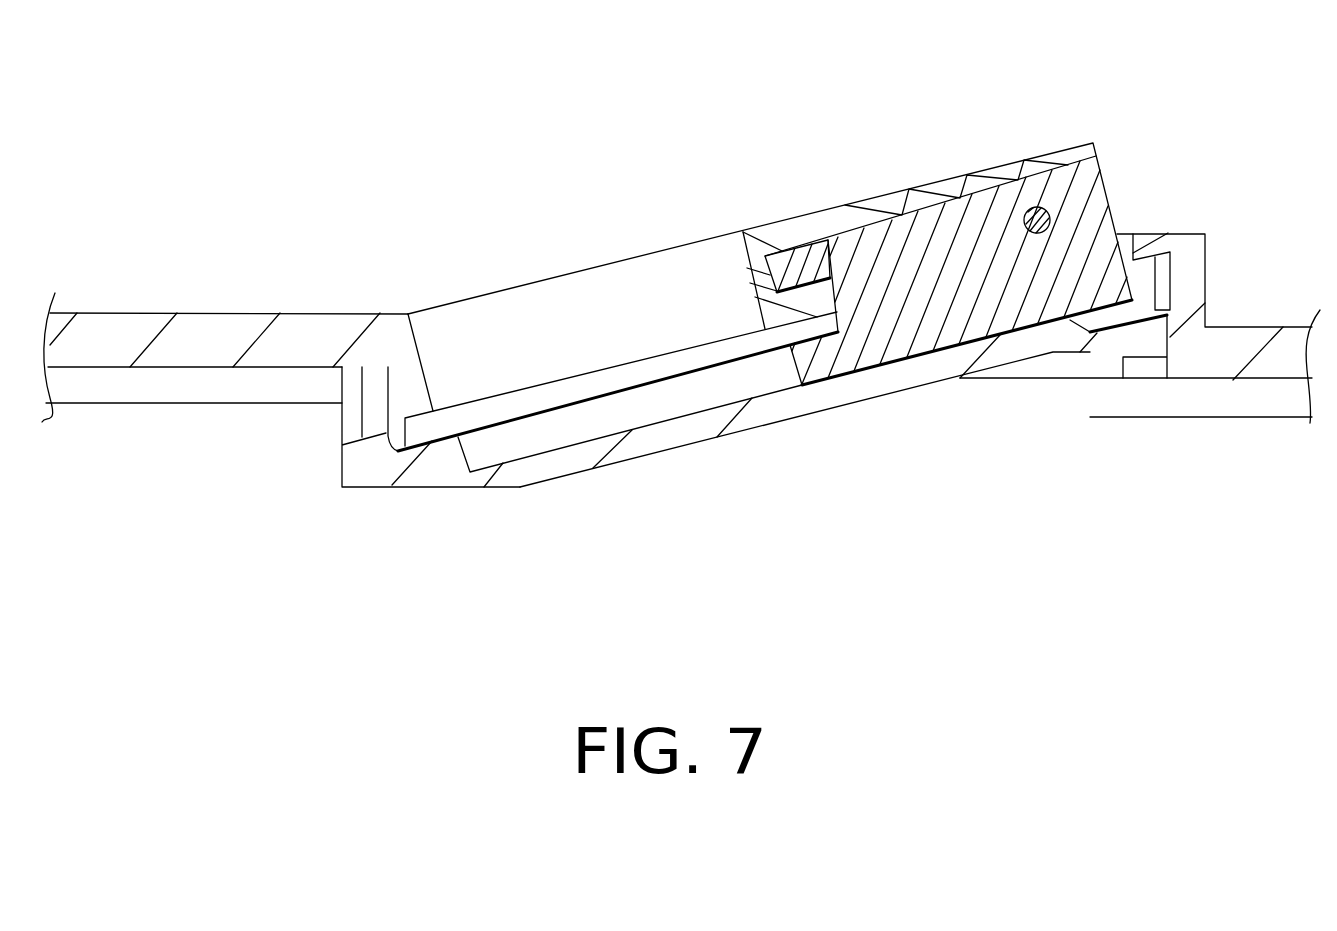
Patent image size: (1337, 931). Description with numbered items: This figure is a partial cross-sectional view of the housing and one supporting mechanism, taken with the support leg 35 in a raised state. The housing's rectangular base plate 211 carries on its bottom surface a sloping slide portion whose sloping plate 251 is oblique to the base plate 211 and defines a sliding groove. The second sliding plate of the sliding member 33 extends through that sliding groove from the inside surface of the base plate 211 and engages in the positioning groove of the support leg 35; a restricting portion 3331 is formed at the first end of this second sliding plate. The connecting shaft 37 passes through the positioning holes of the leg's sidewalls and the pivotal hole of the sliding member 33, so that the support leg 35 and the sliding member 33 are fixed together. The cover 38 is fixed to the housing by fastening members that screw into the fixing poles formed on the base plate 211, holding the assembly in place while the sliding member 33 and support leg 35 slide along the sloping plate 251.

The base plate 211 is at (182, 338).
The sloping plate 251 is at (628, 372).
The sliding member 33 is at (993, 283).
The restricting portion 3331 is at (797, 268).
The support leg 35 is at (1013, 173).
The connecting shaft 37 is at (1040, 207).
The cover 38 is at (803, 397).